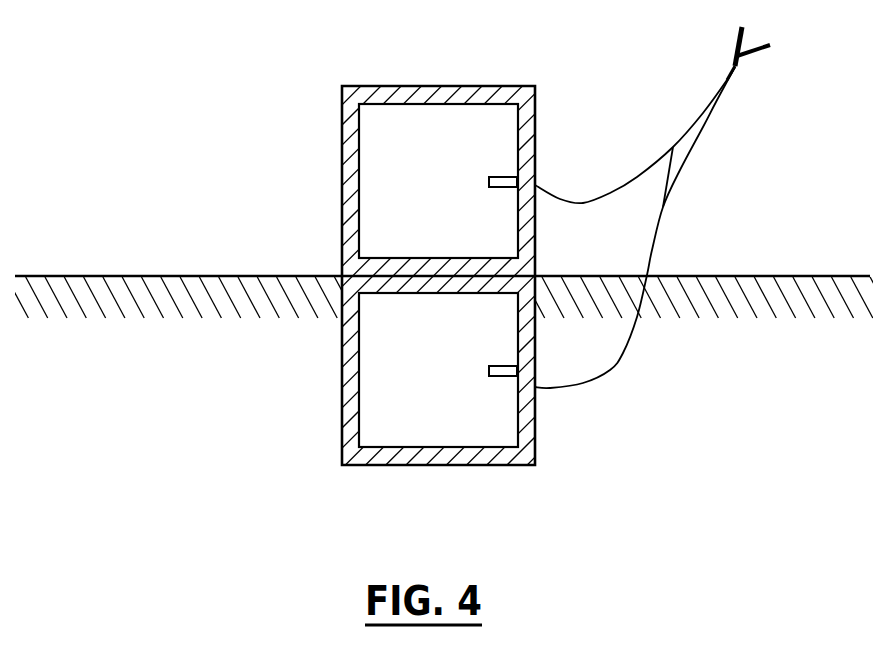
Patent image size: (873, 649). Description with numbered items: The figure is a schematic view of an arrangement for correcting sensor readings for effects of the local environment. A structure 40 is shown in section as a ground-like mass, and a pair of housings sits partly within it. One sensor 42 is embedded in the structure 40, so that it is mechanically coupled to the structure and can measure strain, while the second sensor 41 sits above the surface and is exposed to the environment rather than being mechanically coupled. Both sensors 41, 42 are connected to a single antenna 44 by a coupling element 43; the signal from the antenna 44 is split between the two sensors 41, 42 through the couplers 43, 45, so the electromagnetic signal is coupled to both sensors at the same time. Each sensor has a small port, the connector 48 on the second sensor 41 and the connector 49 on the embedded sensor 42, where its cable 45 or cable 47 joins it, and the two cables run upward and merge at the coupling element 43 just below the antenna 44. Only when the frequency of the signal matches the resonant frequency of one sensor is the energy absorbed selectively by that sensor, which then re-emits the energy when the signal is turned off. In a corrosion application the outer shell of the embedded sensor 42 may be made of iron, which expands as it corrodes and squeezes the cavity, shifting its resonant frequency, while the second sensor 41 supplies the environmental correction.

The structure 40 is at (163, 402).
The second sensor 41 is at (424, 212).
The sensor 42 is at (421, 390).
The coupling element 43 is at (668, 193).
The antenna 44 is at (747, 52).
The coupler 45 is at (635, 175).
The second cable 47 is at (613, 365).
The first connector 48 is at (500, 176).
The second connector 49 is at (508, 378).